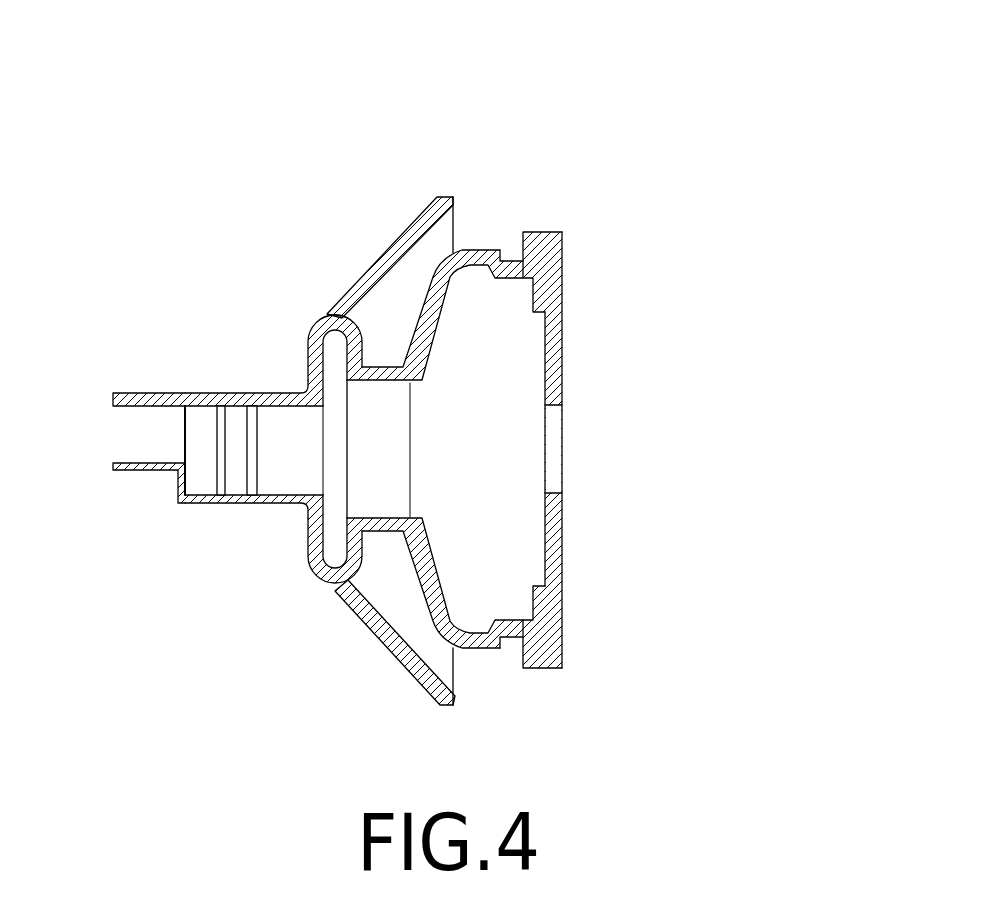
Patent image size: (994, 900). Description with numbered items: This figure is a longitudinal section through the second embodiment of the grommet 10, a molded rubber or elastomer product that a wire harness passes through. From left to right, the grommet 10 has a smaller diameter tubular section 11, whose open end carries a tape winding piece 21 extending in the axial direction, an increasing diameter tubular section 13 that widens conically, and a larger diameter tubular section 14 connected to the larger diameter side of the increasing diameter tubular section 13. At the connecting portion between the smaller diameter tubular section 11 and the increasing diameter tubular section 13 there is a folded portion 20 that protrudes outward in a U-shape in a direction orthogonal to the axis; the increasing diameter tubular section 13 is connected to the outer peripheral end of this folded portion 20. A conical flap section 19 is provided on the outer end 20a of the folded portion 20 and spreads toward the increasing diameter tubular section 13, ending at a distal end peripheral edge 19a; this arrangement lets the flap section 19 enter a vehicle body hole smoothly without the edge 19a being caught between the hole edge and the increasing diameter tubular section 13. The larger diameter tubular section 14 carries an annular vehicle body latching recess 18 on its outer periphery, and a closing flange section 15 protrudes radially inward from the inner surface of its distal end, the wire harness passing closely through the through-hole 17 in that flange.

The grommet 10 is at (443, 355).
The smaller diameter tubular section 11 is at (235, 505).
The increasing diameter tubular section 13 is at (448, 247).
The larger diameter tubular section 14 is at (540, 232).
The closing flange section 15 is at (562, 345).
The through-hole 17 is at (553, 480).
The vehicle body latching recess 18 is at (513, 250).
The flap section 19 is at (402, 233).
The distal end peripheral edge 19a is at (438, 196).
The folded portion 20 is at (312, 347).
The outer end 20a is at (338, 312).
The tape winding piece 21 is at (138, 470).